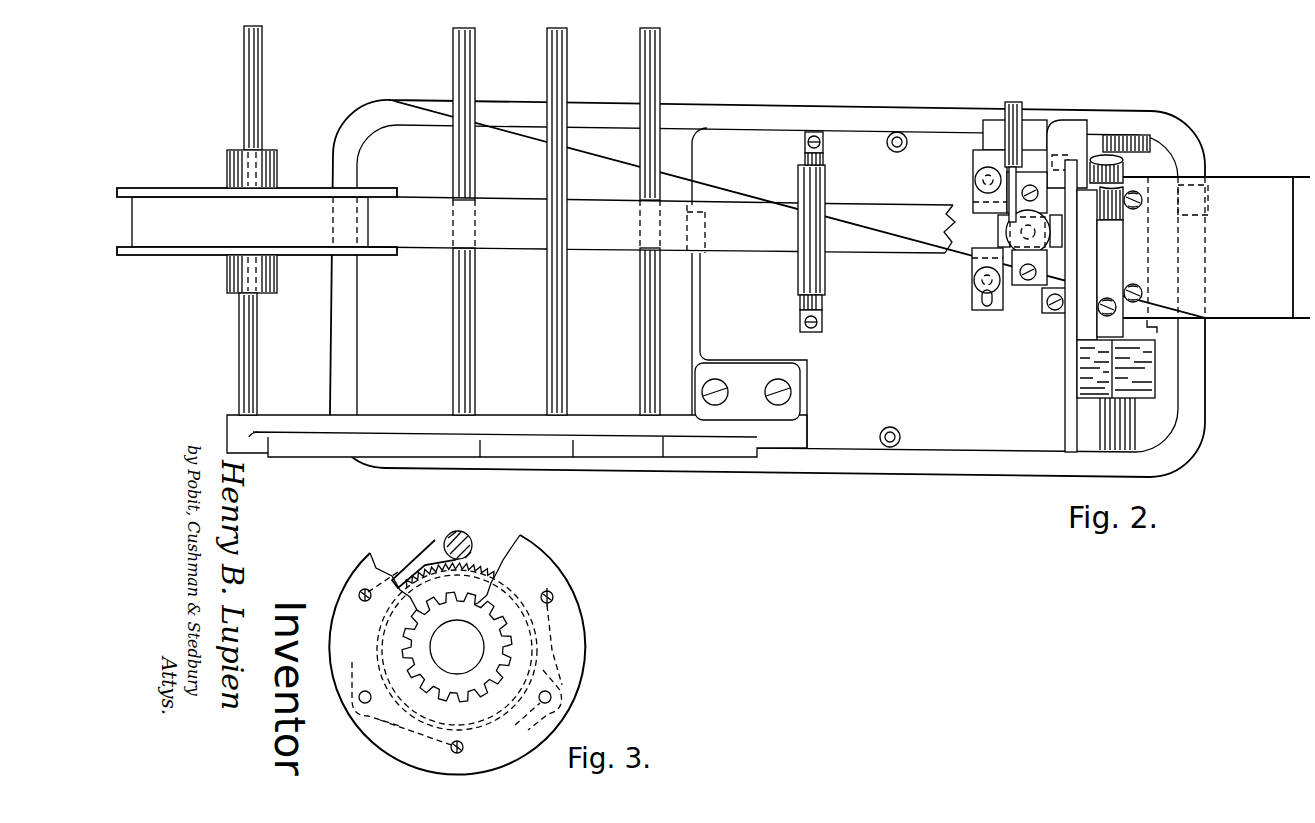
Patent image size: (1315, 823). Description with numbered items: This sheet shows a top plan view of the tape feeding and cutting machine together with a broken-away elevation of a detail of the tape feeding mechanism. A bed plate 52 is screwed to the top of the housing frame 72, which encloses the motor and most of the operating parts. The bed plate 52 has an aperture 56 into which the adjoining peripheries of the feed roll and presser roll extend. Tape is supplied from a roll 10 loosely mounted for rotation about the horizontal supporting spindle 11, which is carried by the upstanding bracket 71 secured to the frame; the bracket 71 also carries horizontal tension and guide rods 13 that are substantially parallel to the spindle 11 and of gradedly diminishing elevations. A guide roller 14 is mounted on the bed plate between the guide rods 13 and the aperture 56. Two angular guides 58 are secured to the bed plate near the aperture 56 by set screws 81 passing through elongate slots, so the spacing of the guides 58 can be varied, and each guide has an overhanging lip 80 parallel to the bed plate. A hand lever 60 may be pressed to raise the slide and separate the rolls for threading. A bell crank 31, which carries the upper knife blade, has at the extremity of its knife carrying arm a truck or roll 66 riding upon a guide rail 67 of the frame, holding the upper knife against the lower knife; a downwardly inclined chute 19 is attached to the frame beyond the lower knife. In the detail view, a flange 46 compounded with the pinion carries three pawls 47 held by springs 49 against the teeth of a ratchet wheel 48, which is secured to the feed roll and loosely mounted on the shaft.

In FIG. 2, the roll 10 is at (162, 197).
In FIG. 2, the supporting spindle 11 is at (240, 352).
In FIG. 2, the tension and guide rods 13 is at (547, 50).
In FIG. 2, the guide roller 14 is at (800, 179).
In FIG. 2, the chute 19 is at (1216, 255).
In FIG. 2, the bell crank 31 is at (1078, 350).
In FIG. 2, the bed plate 52 is at (797, 288).
In FIG. 2, the aperture 56 is at (975, 186).
In FIG. 2, the angular guides 58 is at (972, 282).
In FIG. 2, the hand lever 60 is at (1005, 105).
In FIG. 2, the truck or roll 66 is at (1115, 138).
In FIG. 2, the guide rail 67 is at (1072, 140).
In FIG. 2, the bracket 71 is at (589, 420).
In FIG. 2, the housing frame 72 is at (1172, 430).
In FIG. 2, the overhanging lip 80 is at (973, 202).
In FIG. 2, the set screws 81 is at (975, 168).
In FIG. 3, the flange 46 is at (585, 617).
In FIG. 3, the pawls 47 is at (445, 662).
In FIG. 3, the ratchet wheel 48 is at (470, 567).
In FIG. 3, the springs 49 is at (400, 573).